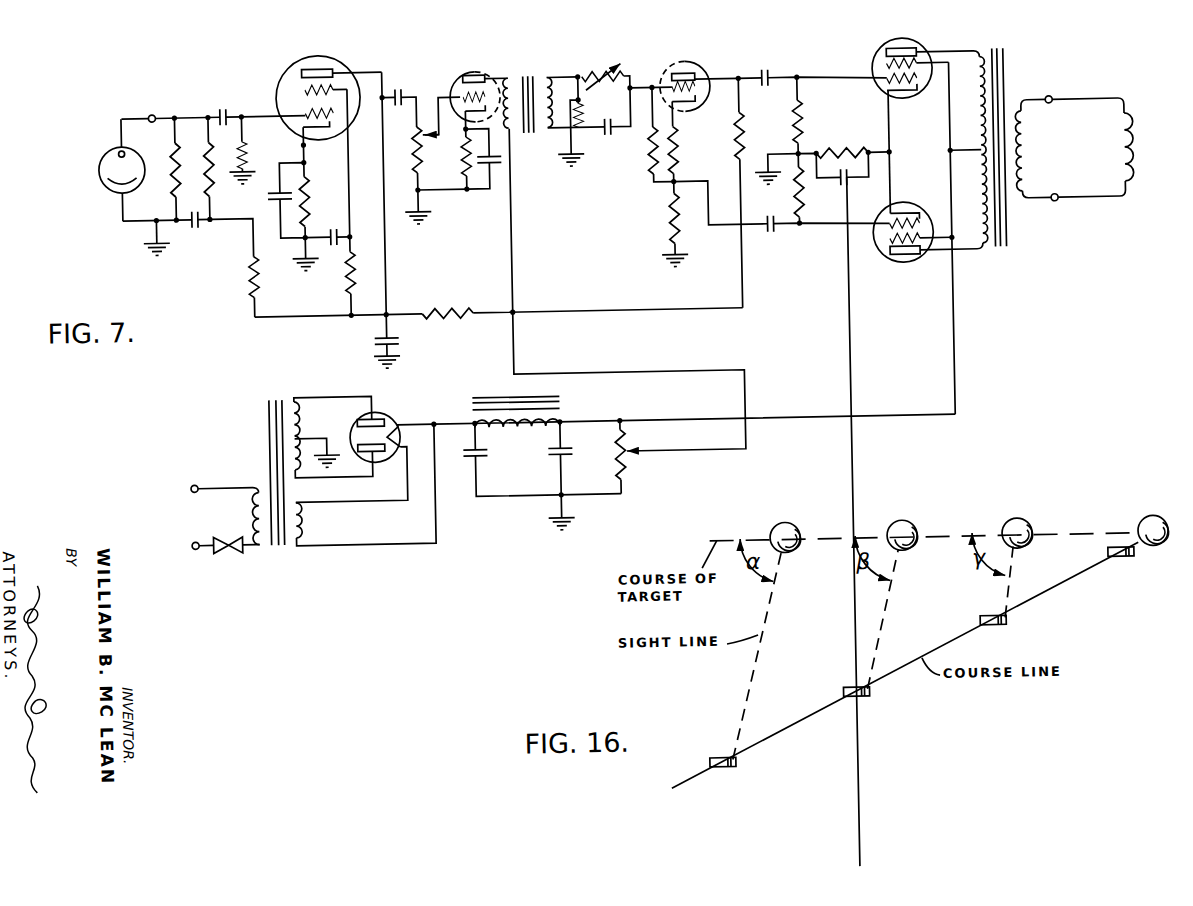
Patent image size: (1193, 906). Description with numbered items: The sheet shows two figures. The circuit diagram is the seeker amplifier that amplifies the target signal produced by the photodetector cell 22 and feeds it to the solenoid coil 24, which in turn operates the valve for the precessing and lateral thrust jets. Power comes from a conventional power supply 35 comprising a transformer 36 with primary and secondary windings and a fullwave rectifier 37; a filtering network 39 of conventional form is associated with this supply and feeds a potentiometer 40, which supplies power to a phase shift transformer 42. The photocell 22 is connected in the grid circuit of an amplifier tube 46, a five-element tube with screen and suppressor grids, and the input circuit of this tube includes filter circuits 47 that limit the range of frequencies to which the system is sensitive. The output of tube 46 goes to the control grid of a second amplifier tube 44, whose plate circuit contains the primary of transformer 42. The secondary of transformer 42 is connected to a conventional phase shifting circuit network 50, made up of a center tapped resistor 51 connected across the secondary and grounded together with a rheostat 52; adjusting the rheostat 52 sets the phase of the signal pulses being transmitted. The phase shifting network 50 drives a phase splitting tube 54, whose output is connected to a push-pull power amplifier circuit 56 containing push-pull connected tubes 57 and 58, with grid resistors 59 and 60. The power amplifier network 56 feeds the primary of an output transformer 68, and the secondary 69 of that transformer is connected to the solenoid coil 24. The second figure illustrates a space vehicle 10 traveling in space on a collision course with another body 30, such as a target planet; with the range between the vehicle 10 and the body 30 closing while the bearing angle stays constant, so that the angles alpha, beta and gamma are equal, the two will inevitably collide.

In FIG. 7, the photodetector cell 22 is at (104, 177).
In FIG. 7, the filter circuits 47 is at (161, 60).
In FIG. 7, the amplifier tube 46 is at (292, 64).
In FIG. 7, the amplifier tube 44 is at (517, 30).
In FIG. 7, the phase shift transformer 42 is at (535, 141).
In FIG. 7, the rheostat 52 is at (611, 70).
In FIG. 7, the phase shifting circuit network 50 is at (657, 30).
In FIG. 7, the center tapped resistor 51 is at (585, 121).
In FIG. 7, the phase splitting tube 54 is at (707, 74).
In FIG. 7, the push-pull power amplifier circuit 56 is at (855, 38).
In FIG. 7, the grid resistor 59 is at (803, 132).
In FIG. 7, the grid resistor 60 is at (805, 201).
In FIG. 7, the push-pull connected tube 57 is at (922, 58).
In FIG. 7, the push-pull connected tube 58 is at (899, 270).
In FIG. 7, the output transformer 68 is at (1014, 74).
In FIG. 7, the secondary 69 is at (1038, 156).
In FIG. 7, the solenoid coil 24 is at (1096, 188).
In FIG. 7, the power supply 35 is at (246, 346).
In FIG. 7, the transformer 36 is at (263, 439).
In FIG. 7, the fullwave rectifier 37 is at (383, 411).
In FIG. 7, the filtering network 39 is at (615, 388).
In FIG. 7, the potentiometer 40 is at (625, 464).
In FIG. 16, the other body 30 is at (788, 531).
In FIG. 16, the space vehicle 10 is at (723, 770).